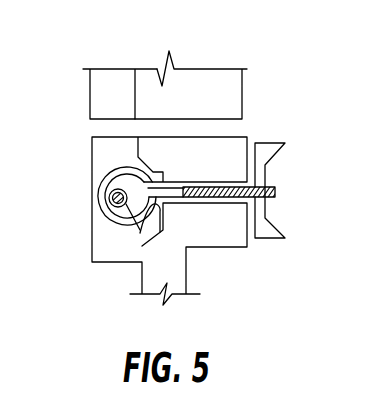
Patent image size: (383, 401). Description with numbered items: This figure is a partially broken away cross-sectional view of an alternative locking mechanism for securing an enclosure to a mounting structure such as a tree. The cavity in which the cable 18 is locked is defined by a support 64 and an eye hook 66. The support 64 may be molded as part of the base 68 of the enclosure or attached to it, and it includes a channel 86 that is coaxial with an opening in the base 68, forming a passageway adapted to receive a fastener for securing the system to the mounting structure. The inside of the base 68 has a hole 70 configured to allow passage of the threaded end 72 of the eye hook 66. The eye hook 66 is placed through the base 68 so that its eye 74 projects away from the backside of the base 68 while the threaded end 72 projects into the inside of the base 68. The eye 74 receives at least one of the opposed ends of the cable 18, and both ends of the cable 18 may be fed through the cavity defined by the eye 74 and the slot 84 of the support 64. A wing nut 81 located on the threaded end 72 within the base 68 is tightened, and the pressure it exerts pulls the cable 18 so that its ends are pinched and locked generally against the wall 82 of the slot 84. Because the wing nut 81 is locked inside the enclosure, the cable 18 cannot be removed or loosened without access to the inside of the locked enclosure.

The support 64 is at (107, 108).
The base 68 is at (182, 92).
The channel 86 is at (246, 114).
The eye hook 66 is at (222, 183).
The wing nut 81 is at (282, 143).
The threaded end 72 is at (278, 193).
The slot 84 is at (91, 203).
The eye 74 is at (128, 188).
The cable 18 is at (109, 203).
The wall 82 is at (143, 214).
The hole 70 is at (207, 213).